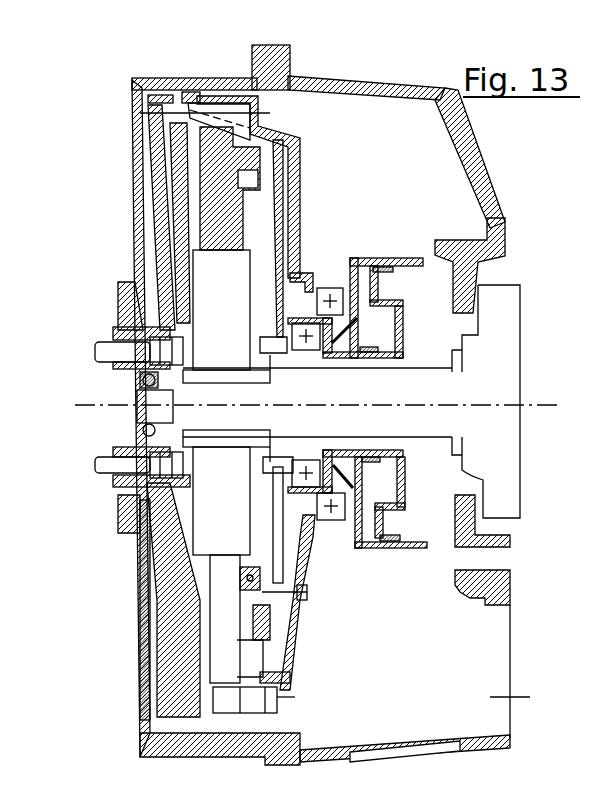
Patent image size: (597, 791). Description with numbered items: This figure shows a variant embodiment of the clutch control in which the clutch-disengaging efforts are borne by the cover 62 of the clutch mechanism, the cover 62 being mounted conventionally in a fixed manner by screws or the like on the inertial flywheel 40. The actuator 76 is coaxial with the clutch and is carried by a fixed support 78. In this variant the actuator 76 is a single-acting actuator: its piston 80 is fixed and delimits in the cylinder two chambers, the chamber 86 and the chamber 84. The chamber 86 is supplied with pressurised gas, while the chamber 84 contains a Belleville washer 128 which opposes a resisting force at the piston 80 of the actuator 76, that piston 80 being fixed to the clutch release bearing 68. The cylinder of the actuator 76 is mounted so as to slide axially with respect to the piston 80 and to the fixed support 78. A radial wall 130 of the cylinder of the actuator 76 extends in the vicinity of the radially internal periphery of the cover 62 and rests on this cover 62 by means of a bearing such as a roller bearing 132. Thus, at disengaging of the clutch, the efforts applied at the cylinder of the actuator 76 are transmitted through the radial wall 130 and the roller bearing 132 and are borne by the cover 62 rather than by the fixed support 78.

The inertial flywheel 40 is at (162, 180).
The cover 62 is at (296, 163).
The fixed support 78 is at (466, 167).
The radial wall 130 is at (355, 258).
The roller bearing 132 is at (328, 288).
The chamber 86 is at (398, 329).
The clutch release bearing 68 is at (302, 351).
The Belleville washer 128 is at (338, 348).
The chamber 84 is at (345, 456).
The piston 80 is at (406, 467).
The actuator 76 is at (372, 548).